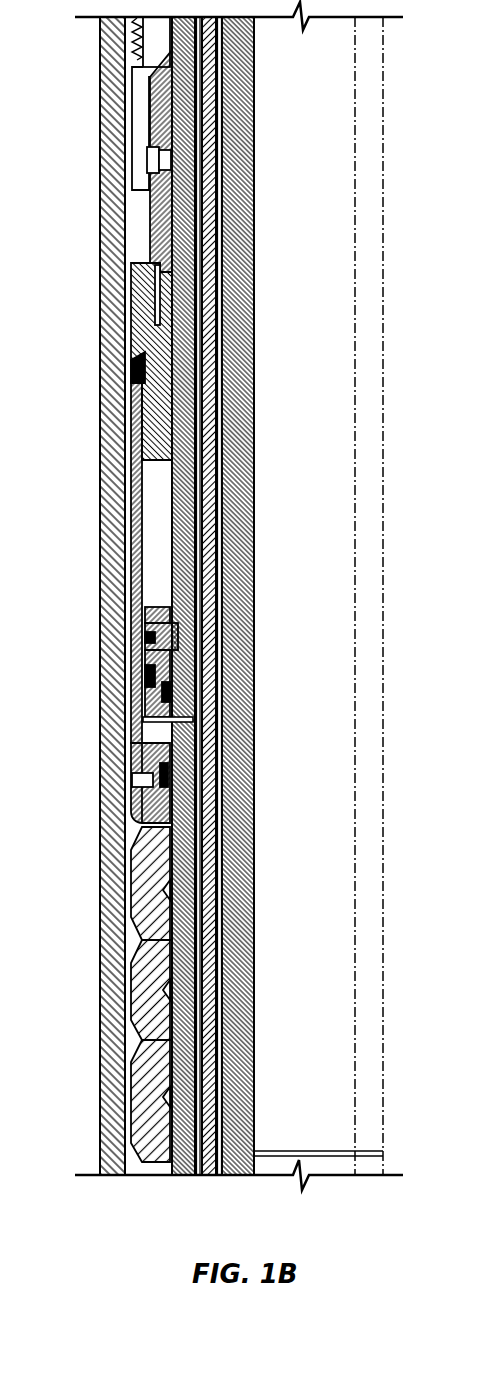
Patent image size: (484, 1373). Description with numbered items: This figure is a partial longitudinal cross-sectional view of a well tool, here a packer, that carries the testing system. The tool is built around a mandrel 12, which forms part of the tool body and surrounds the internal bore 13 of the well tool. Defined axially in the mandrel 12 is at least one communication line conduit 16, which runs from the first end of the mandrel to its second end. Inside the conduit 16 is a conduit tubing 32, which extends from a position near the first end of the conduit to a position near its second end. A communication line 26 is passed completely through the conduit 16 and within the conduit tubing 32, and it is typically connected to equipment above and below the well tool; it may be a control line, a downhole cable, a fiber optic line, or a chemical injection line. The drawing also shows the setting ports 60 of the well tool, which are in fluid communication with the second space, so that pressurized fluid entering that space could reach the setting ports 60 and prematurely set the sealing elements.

The mandrel 12 is at (190, 305).
The internal bore 13 is at (325, 108).
The communication line conduit 16 is at (220, 830).
The communication line 26 is at (213, 547).
The conduit tubing 32 is at (222, 597).
The setting ports 60 is at (175, 720).